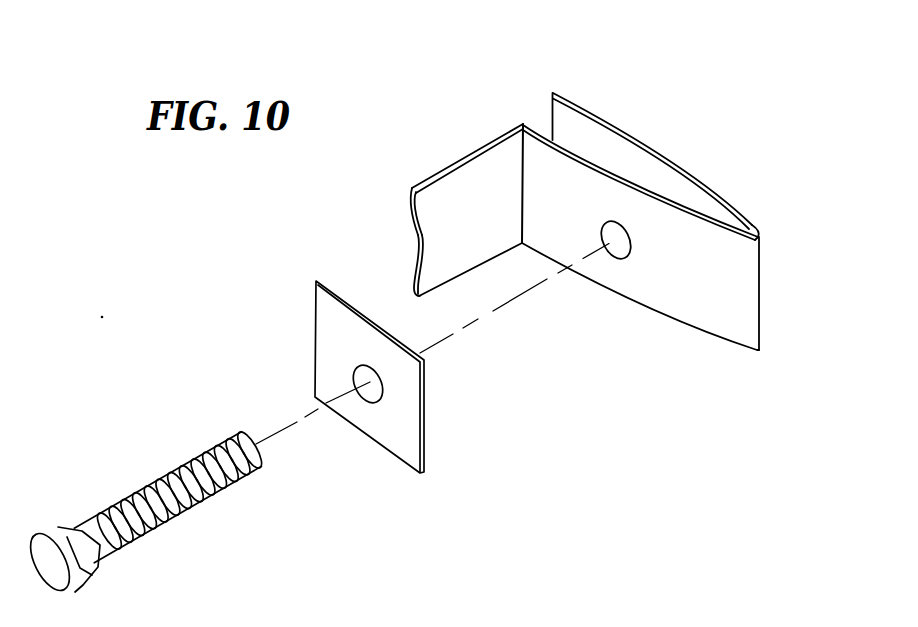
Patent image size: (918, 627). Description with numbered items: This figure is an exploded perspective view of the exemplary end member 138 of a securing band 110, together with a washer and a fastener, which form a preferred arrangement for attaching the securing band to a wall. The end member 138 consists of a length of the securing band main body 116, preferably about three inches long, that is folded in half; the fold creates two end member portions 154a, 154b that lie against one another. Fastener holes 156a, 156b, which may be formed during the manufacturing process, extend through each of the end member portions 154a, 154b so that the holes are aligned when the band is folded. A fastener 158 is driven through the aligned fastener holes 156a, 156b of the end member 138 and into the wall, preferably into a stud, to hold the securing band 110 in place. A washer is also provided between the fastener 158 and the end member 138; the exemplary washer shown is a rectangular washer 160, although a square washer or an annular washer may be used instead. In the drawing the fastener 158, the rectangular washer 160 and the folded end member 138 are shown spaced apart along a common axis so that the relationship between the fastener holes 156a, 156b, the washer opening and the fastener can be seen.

The end member 138 is at (652, 78).
The securing band 110 is at (463, 162).
The securing band main body 116 is at (443, 272).
The end member portion 154a is at (630, 282).
The end member portion 154b is at (716, 204).
The fastener hole 156a is at (630, 252).
The fastener hole 156b is at (663, 197).
The fastener 158 is at (175, 511).
The rectangular washer 160 is at (408, 442).